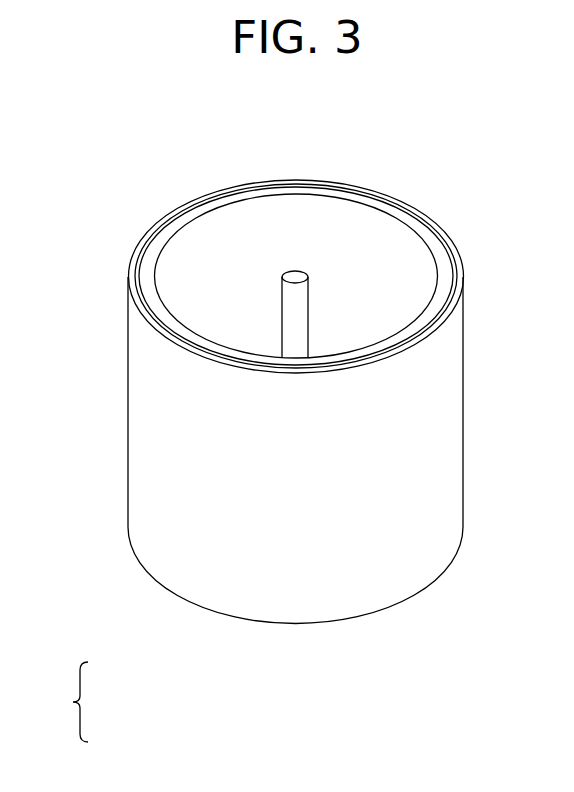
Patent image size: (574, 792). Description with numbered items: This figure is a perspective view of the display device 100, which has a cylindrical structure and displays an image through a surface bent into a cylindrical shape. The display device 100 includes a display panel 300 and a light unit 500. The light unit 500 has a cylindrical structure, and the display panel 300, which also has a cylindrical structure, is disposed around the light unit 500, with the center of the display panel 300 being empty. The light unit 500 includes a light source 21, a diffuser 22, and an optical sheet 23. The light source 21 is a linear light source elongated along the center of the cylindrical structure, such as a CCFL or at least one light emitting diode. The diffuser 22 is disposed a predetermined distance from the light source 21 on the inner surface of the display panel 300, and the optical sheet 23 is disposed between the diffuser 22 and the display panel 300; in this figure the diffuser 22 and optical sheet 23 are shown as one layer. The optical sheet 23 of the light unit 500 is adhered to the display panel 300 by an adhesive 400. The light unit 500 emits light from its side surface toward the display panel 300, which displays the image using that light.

The display device 100 is at (447, 190).
The display panel 300 is at (242, 185).
The adhesive 400 is at (192, 205).
The light source 21 is at (294, 276).
The diffuser 22 is at (103, 703).
The optical sheet 23 is at (103, 734).
The light unit 500 is at (75, 702).